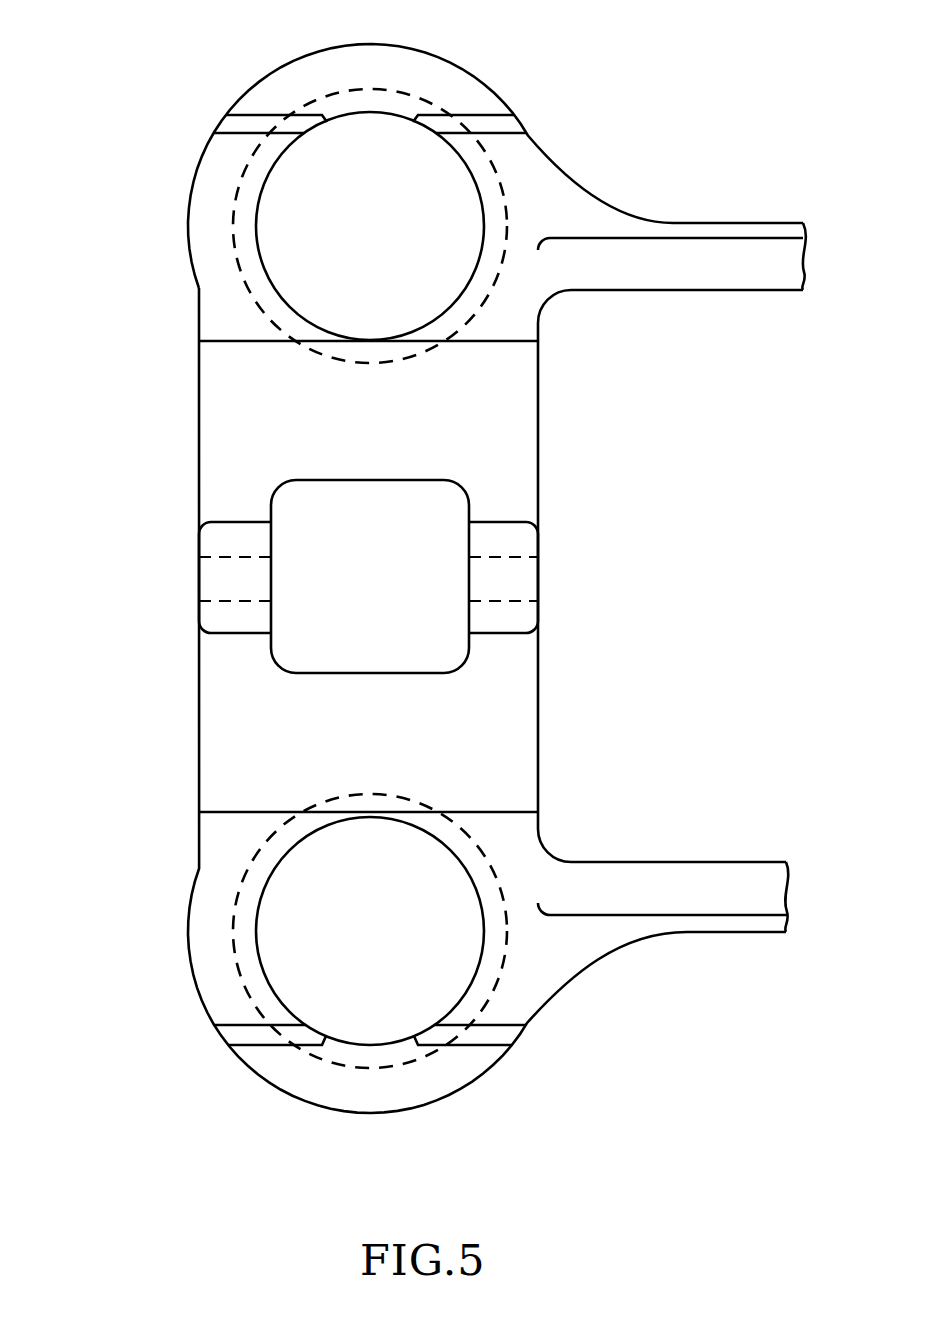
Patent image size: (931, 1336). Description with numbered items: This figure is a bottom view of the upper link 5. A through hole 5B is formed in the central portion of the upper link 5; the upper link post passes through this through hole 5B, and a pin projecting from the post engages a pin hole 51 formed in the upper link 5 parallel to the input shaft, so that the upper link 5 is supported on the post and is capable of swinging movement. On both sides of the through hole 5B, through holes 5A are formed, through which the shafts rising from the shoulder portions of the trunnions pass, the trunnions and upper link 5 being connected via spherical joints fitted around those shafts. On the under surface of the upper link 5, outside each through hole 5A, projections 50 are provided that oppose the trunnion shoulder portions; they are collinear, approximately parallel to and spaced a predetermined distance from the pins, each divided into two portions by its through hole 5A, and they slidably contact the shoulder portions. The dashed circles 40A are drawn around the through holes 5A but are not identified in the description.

The upper link 5 is at (633, 213).
The through hole 5A is at (270, 274).
The through hole 5B is at (286, 487).
The bearing (hidden) 40A is at (233, 200).
The projection 50 is at (248, 123).
The pin hole 51 is at (235, 558).